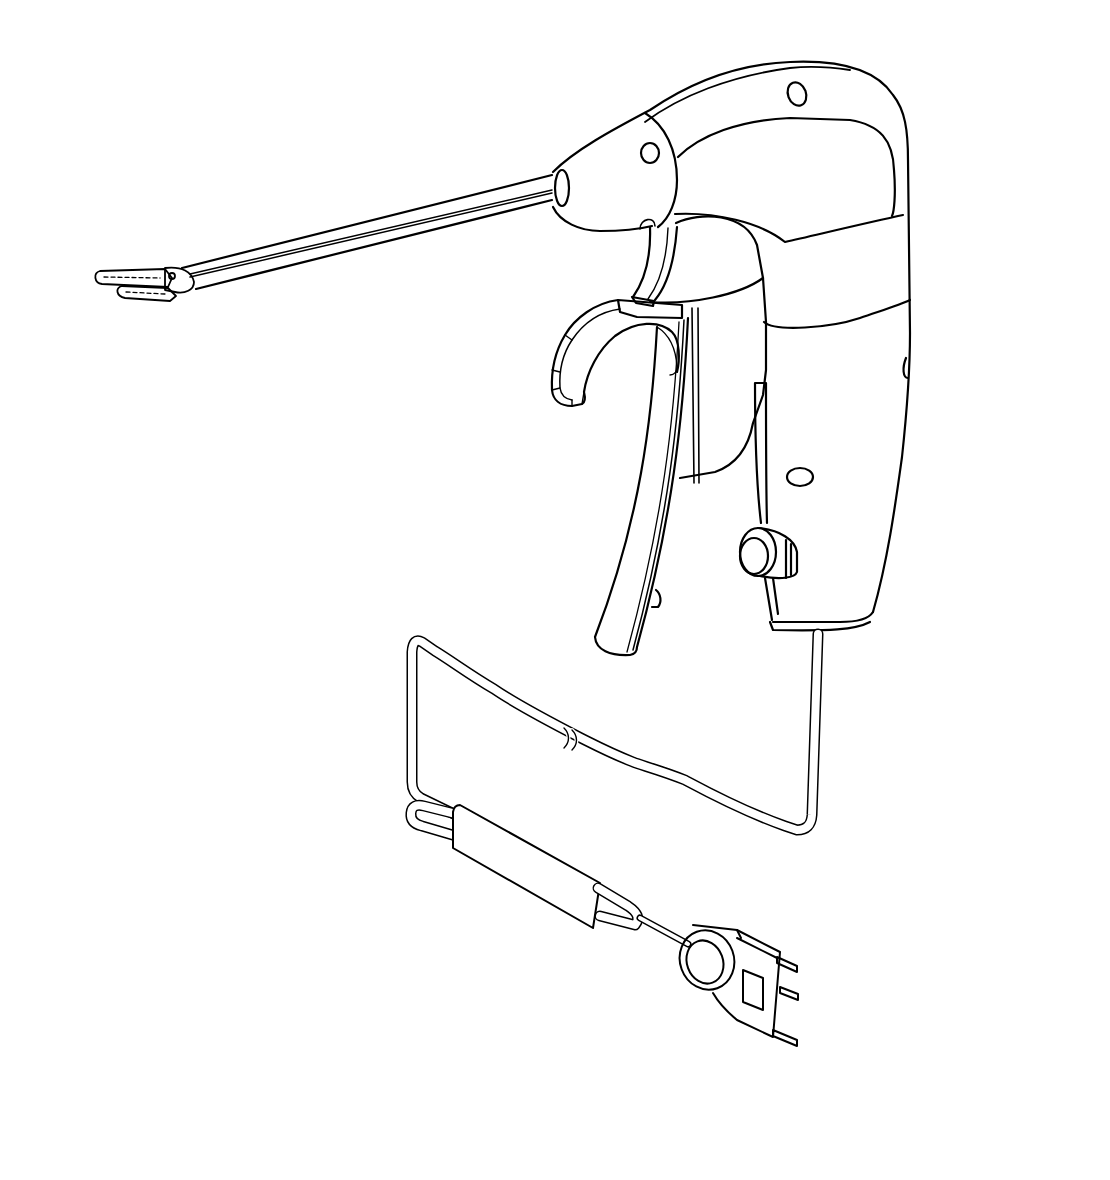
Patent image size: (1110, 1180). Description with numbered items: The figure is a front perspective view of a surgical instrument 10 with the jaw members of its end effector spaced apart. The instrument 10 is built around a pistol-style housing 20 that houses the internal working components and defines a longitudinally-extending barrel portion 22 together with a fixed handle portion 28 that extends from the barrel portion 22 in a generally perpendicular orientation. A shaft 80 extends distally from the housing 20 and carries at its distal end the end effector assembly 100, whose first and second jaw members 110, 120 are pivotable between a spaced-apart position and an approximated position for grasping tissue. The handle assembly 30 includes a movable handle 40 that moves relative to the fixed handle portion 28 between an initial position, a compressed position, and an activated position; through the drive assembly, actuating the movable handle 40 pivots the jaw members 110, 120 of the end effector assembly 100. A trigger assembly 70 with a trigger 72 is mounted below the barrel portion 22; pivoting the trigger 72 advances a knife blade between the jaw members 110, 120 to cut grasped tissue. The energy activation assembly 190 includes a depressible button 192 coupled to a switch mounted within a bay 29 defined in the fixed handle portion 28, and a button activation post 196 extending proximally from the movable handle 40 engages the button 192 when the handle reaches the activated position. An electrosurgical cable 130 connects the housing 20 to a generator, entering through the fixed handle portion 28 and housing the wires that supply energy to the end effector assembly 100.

The instrument 10 is at (419, 142).
The housing 20 is at (838, 53).
The barrel portion 22 is at (847, 158).
The fixed handle portion 28 is at (847, 447).
The bay 29 is at (798, 558).
The handle assembly 30 is at (783, 703).
The movable handle 40 is at (599, 565).
The trigger assembly 70 is at (620, 242).
The trigger 72 is at (650, 260).
The shaft 80 is at (321, 254).
The end effector assembly 100 is at (187, 252).
The jaw member 110 is at (83, 283).
The jaw member 120 is at (138, 307).
The electrosurgical cable 130 is at (822, 823).
The energy activation assembly 190 is at (749, 587).
The depressible button 192 is at (753, 557).
The button activation post 196 is at (658, 604).